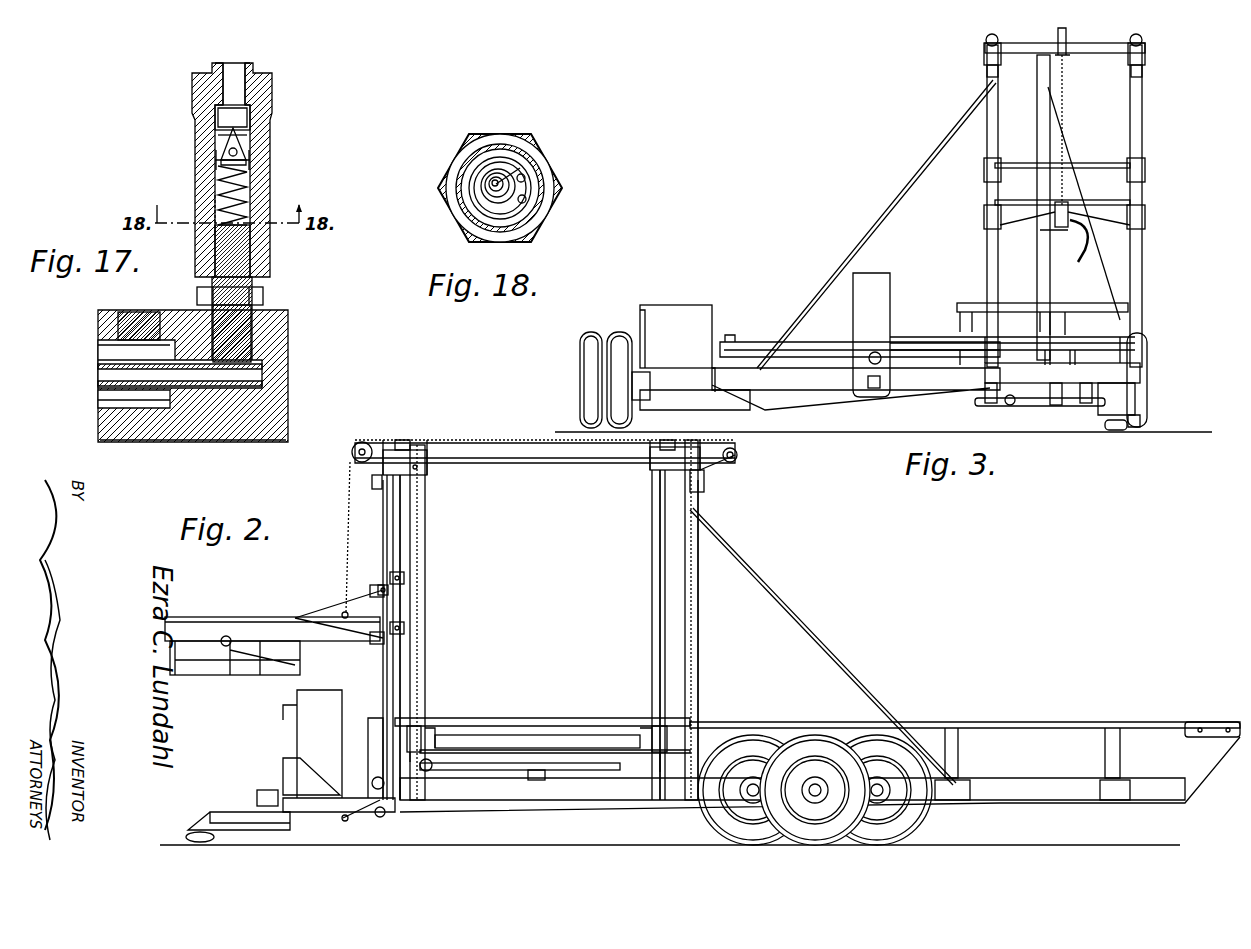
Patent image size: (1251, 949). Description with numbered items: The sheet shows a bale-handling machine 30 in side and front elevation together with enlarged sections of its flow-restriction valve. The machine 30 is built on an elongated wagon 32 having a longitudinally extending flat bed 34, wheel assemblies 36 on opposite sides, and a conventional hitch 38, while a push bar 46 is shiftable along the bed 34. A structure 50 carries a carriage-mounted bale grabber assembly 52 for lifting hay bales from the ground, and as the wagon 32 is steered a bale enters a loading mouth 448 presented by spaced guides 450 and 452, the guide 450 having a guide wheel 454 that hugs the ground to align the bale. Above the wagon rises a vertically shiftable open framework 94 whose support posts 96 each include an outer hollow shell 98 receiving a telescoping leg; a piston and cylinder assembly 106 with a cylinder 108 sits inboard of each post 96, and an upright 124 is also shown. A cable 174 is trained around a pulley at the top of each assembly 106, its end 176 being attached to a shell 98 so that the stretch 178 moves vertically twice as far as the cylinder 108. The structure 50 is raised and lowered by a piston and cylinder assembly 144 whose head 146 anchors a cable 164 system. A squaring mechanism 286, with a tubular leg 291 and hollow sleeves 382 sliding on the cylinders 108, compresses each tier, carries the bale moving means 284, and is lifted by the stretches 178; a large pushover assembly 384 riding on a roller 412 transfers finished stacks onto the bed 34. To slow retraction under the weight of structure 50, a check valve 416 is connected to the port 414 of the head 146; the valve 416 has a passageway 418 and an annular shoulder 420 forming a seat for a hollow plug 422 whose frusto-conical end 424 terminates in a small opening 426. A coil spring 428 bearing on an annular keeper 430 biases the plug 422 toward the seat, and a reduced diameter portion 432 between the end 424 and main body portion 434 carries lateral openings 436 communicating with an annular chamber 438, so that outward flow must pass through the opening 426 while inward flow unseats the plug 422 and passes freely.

In FIG. 3, the bale-handling machine 30 is at (893, 192).
In FIG. 2, the bale-handling machine 30 is at (800, 608).
In FIG. 3, the wagon 32 is at (700, 300).
In FIG. 2, the wagon 32 is at (996, 802).
In FIG. 3, the flat bed 34 is at (722, 342).
In FIG. 2, the flat bed 34 is at (1052, 780).
In FIG. 3, the wheel assemblies 36 is at (577, 375).
In FIG. 2, the wheel assemblies 36 is at (700, 818).
In FIG. 3, the hitch 38 is at (880, 396).
In FIG. 2, the hitch 38 is at (262, 788).
In FIG. 3, the push bar 46 is at (812, 372).
In FIG. 3, the structure 50 is at (1148, 185).
In FIG. 2, the structure 50 is at (445, 440).
In FIG. 3, the bale grabber assembly 52 is at (1098, 229).
In FIG. 2, the bale grabber assembly 52 is at (240, 680).
In FIG. 3, the open framework 94 is at (1105, 58).
In FIG. 2, the open framework 94 is at (515, 468).
In FIG. 3, the support post 96 is at (985, 250).
In FIG. 2, the support post 96 is at (398, 680).
In FIG. 3, the outer hollow shell 98 is at (992, 140).
In FIG. 2, the outer hollow shell 98 is at (388, 530).
In FIG. 2, the piston and cylinder assembly 106 is at (408, 663).
In FIG. 2, the cylinder 108 is at (418, 567).
In FIG. 2, the upright 124 is at (430, 515).
In FIG. 17, the piston and cylinder assembly 144 is at (290, 360).
In FIG. 17, the head 146 is at (280, 412).
In FIG. 2, the cable 164 is at (345, 490).
In FIG. 3, the cable 174 is at (982, 52).
In FIG. 2, the cable 174 is at (650, 515).
In FIG. 3, the cable end 176 is at (988, 78).
In FIG. 2, the cable end 176 is at (373, 490).
In FIG. 2, the cable stretch 178 is at (405, 630).
In FIG. 2, the bale moving means 284 is at (470, 712).
In FIG. 2, the squaring mechanism 286 is at (528, 750).
In FIG. 3, the tubular leg 291 is at (1142, 345).
In FIG. 2, the hollow sleeve 382 is at (422, 737).
In FIG. 2, the large pushover assembly 384 is at (480, 780).
In FIG. 2, the roller 412 is at (546, 778).
In FIG. 17, the port 414 is at (262, 300).
In FIG. 17, the check valve 416 is at (262, 160).
In FIG. 17, the passageway 418 is at (212, 112).
In FIG. 17, the annular shoulder 420 is at (218, 136).
In FIG. 17, the hollow plug 422 is at (247, 184).
In FIG. 17, the frusto-conical end 424 is at (262, 132).
In FIG. 17, the small opening 426 is at (252, 115).
In FIG. 18, the small opening 426 is at (520, 168).
In FIG. 17, the coil spring 428 is at (215, 190).
In FIG. 17, the annular keeper 430 is at (272, 240).
In FIG. 18, the annular keeper 430 is at (522, 200).
In FIG. 17, the reduced diameter portion 432 is at (262, 168).
In FIG. 17, the main body portion 434 is at (215, 200).
In FIG. 17, the lateral openings 436 is at (216, 165).
In FIG. 17, the annular chamber 438 is at (221, 150).
In FIG. 3, the loading mouth 448 is at (1087, 406).
In FIG. 2, the loading mouth 448 is at (195, 815).
In FIG. 3, the guide 450 is at (1130, 430).
In FIG. 2, the guide 450 is at (212, 838).
In FIG. 3, the guide 452 is at (1005, 404).
In FIG. 3, the guide wheel 454 is at (1112, 430).